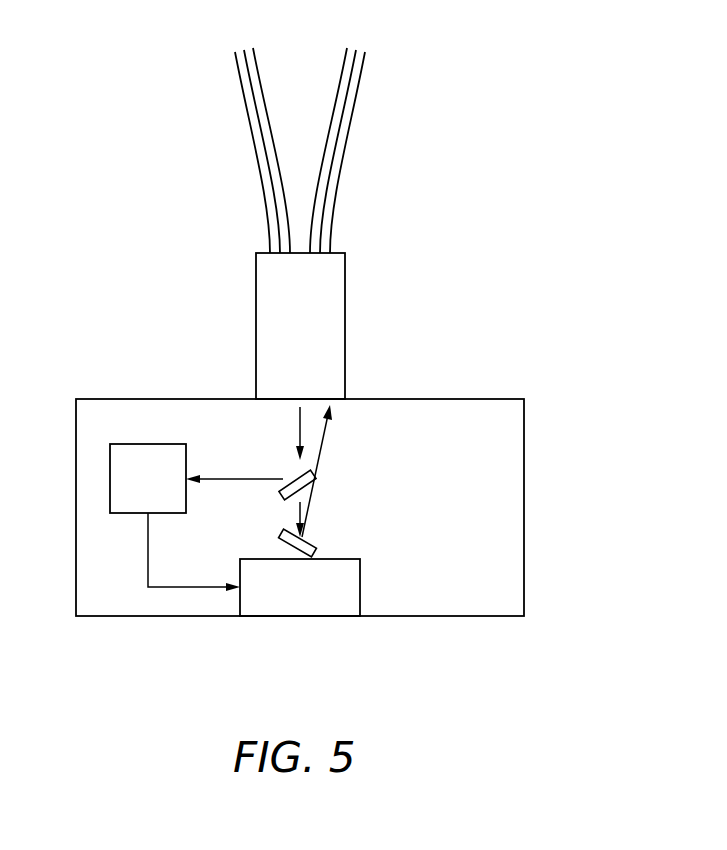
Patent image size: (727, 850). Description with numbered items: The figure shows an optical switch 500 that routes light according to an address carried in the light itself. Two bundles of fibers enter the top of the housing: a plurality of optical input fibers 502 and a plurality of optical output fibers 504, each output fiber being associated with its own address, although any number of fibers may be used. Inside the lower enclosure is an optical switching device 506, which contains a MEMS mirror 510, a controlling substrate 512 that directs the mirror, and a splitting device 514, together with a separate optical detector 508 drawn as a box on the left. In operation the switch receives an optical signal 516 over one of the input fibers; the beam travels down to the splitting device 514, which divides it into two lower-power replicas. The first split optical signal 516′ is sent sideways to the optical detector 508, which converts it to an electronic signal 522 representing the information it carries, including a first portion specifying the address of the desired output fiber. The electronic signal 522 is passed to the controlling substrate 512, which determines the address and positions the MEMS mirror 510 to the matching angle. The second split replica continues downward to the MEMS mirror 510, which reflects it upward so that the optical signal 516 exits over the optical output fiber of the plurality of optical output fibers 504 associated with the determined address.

The optical switch 500 is at (508, 182).
The optical input fibers 502 is at (262, 41).
The optical output fibers 504 is at (378, 54).
The optical switching device 506 is at (374, 528).
The optical detector 508 is at (110, 477).
The MEMS mirror 510 is at (310, 537).
The controlling substrate 512 is at (360, 588).
The splitting device 514 is at (318, 482).
The optical signal 516 is at (300, 417).
The first split optical signal 516′ is at (222, 479).
The electronic signal 522 is at (193, 588).